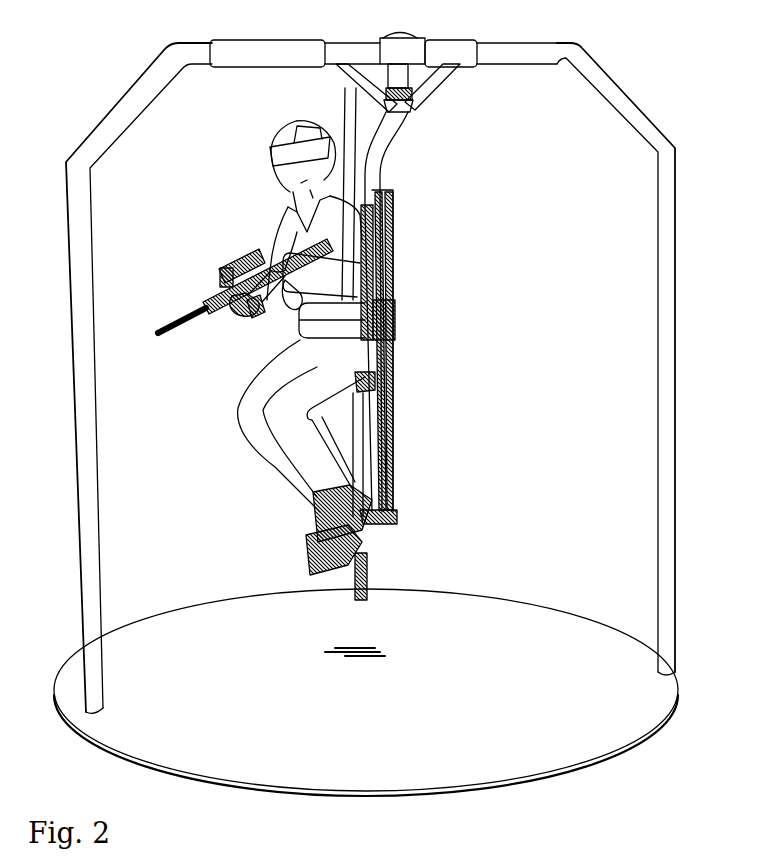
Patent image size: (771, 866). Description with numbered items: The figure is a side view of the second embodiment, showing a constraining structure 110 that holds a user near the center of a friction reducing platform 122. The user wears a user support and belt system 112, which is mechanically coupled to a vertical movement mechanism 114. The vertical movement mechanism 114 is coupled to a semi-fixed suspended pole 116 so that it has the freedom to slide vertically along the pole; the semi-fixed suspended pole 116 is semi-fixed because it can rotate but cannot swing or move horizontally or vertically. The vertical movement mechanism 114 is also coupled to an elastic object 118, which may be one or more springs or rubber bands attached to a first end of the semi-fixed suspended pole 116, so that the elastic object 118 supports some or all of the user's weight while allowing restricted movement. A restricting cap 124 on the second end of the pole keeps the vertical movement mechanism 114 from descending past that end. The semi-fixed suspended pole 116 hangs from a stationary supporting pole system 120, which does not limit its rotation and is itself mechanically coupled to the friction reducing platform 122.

The constraining structure 110 is at (358, 413).
The user support and belt system 112 is at (312, 341).
The vertical movement mechanism 114 is at (391, 332).
The semi-fixed suspended pole 116 is at (383, 160).
The elastic object 118 is at (397, 252).
The stationary supporting pole system 120 is at (624, 125).
The friction reducing platform 122 is at (515, 593).
The restricting cap 124 is at (397, 517).